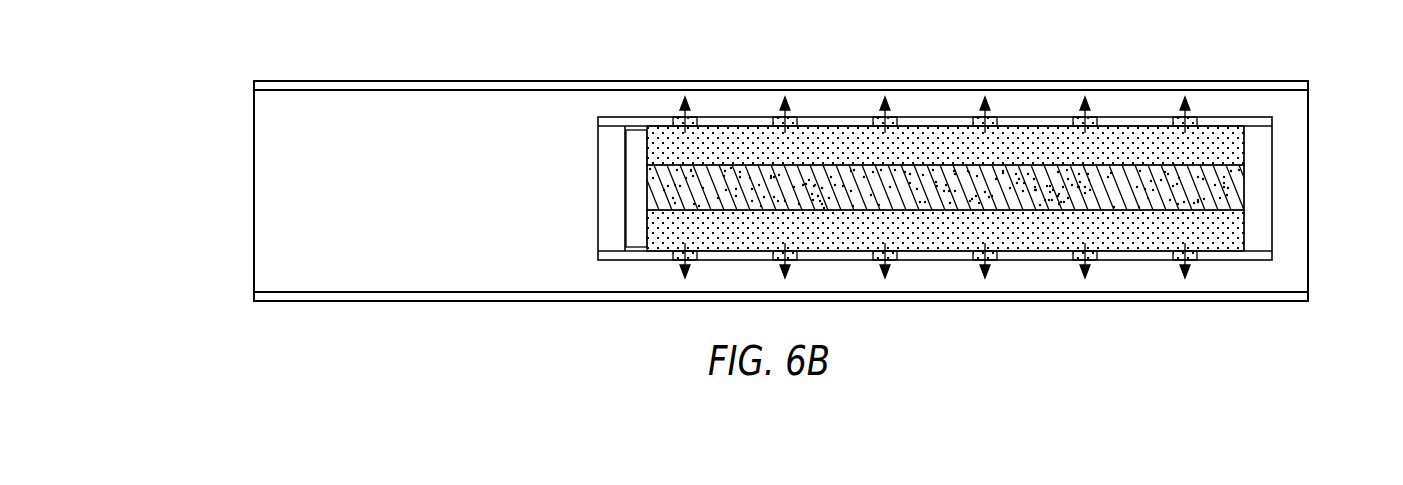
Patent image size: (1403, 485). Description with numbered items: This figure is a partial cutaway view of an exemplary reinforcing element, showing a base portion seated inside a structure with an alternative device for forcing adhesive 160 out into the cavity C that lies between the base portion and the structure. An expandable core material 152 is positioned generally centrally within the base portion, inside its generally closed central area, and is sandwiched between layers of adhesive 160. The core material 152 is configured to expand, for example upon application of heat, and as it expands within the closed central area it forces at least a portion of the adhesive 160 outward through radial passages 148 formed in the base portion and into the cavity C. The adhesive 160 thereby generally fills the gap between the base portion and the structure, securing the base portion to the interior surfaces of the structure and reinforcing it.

The cavity C is at (546, 130).
The radial passages 148 is at (1070, 120).
The expandable core material 152 is at (1223, 195).
The adhesive 160 is at (843, 156).